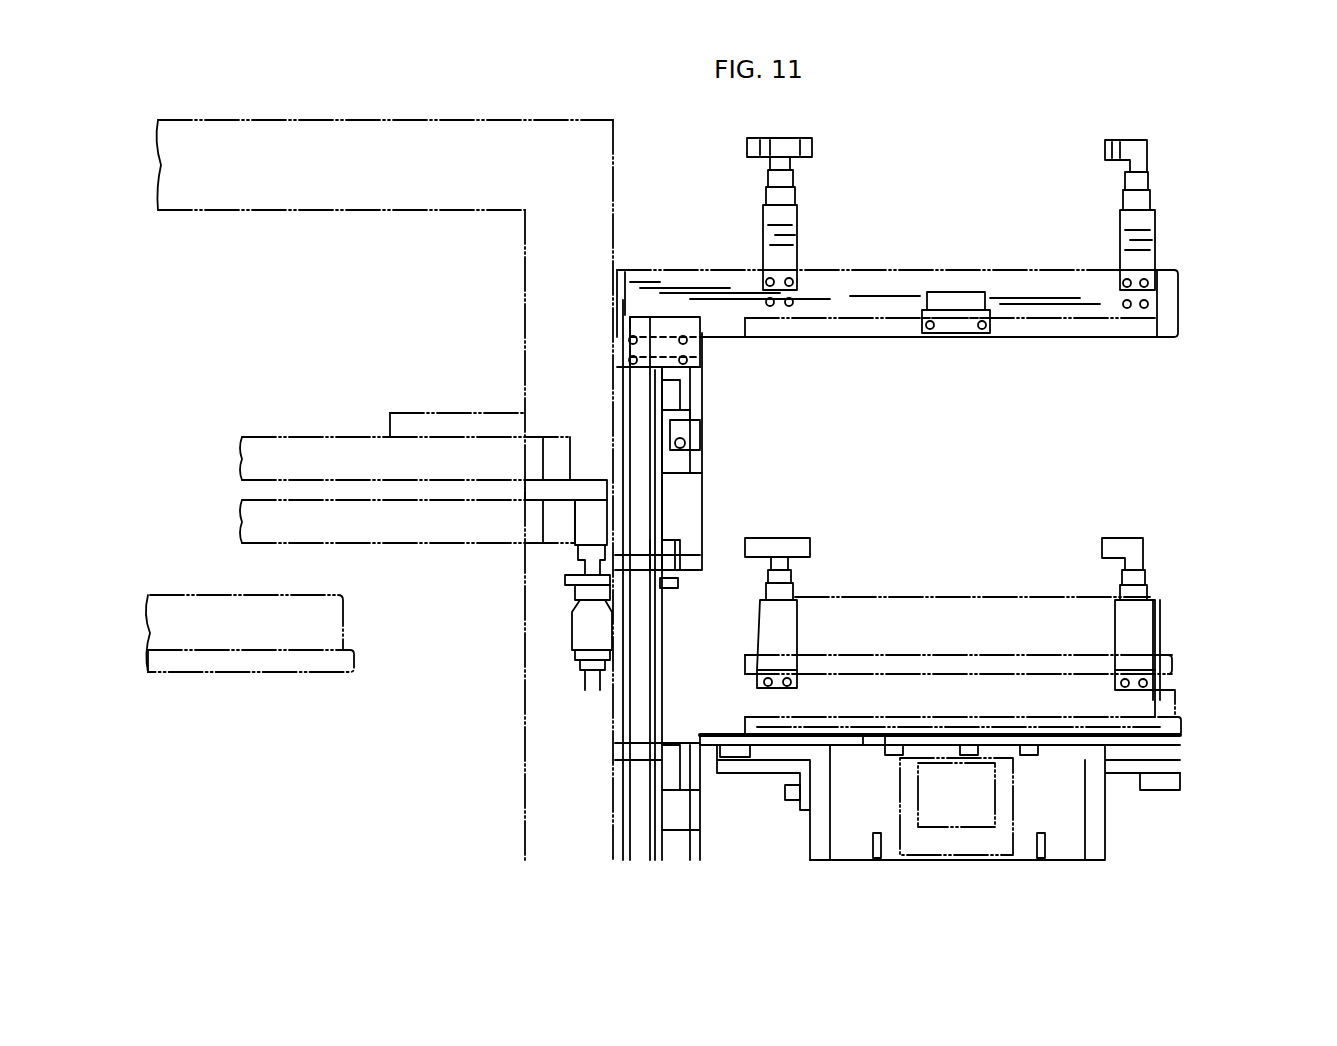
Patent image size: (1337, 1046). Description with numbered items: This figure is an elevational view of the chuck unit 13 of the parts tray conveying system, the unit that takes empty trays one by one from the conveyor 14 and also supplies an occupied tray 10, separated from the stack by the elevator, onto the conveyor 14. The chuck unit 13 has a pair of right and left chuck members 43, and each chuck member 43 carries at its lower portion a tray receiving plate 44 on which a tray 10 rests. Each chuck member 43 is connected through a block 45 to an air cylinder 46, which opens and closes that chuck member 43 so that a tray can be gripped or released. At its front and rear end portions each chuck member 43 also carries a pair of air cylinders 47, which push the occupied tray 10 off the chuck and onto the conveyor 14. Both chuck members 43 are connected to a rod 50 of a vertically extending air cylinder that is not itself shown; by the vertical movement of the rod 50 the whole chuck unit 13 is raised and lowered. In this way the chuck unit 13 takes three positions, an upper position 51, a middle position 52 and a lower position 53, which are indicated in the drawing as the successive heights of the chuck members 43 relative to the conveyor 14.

The occupied tray 10 is at (348, 632).
The chuck unit 13 is at (995, 188).
The conveyor 14 is at (1070, 863).
The chuck member 43 is at (1052, 272).
The tray receiving plate 44 is at (888, 338).
The block 45 is at (702, 455).
The air cylinder 46 is at (687, 510).
The air cylinder 47 is at (778, 228).
The rod 50 is at (593, 690).
The upper position 51 is at (1183, 338).
The middle position 52 is at (1175, 672).
The lower position 53 is at (1183, 735).